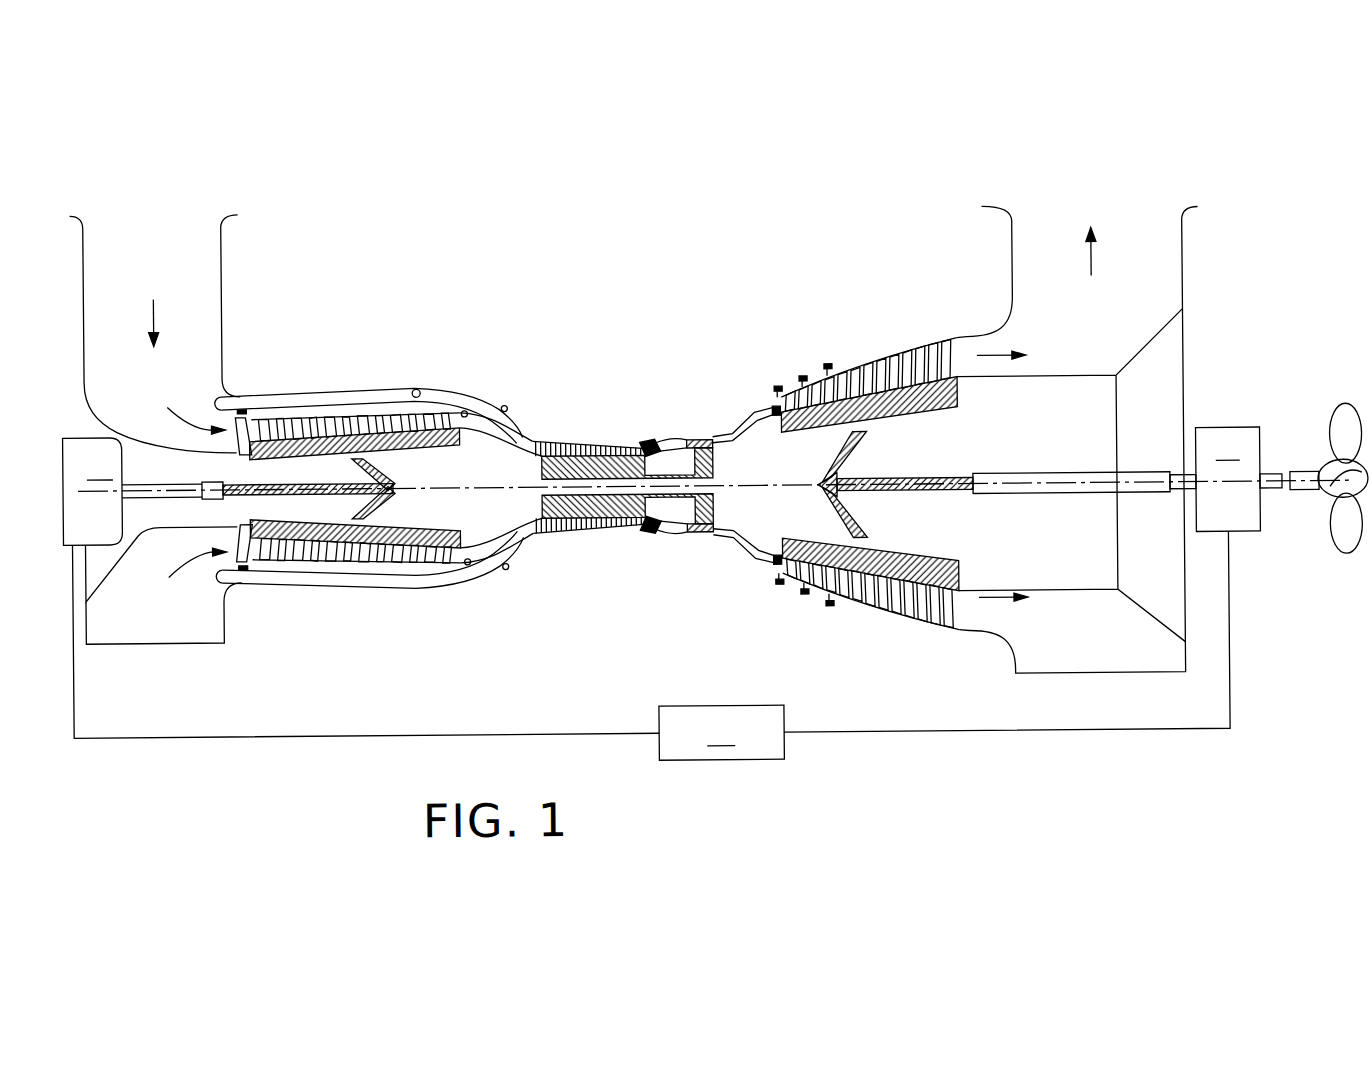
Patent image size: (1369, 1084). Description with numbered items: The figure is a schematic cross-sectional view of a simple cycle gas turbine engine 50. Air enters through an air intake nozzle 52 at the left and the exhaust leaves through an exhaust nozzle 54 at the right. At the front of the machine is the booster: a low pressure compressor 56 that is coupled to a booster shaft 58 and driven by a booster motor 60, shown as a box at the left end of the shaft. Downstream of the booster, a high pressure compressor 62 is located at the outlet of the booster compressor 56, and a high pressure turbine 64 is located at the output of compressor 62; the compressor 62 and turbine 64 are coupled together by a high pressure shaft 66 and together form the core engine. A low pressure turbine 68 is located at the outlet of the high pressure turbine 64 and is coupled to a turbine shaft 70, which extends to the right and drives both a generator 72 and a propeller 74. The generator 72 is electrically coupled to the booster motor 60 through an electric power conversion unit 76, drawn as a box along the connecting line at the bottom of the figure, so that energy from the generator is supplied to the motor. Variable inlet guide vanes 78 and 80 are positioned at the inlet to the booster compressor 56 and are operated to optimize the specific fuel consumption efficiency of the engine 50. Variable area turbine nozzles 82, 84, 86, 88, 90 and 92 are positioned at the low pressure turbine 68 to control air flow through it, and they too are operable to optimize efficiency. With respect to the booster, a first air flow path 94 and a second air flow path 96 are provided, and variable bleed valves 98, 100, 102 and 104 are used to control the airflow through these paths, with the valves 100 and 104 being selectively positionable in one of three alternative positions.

The gas turbine engine 50 is at (648, 328).
The air intake nozzle 52 is at (226, 282).
The exhaust nozzle 54 is at (1013, 276).
The low pressure compressor 56 is at (327, 440).
The booster shaft 58 is at (315, 476).
The booster motor 60 is at (143, 491).
The high pressure compressor 62 is at (572, 524).
The high pressure turbine 64 is at (714, 515).
The high pressure shaft 66 is at (674, 535).
The low pressure turbine 68 is at (898, 557).
The turbine shaft 70 is at (894, 479).
The generator 72 is at (1226, 479).
The propeller 74 is at (1336, 408).
The electric power conversion unit 76 is at (651, 648).
The variable inlet guide vane 78 is at (243, 404).
The variable inlet guide vane 80 is at (243, 567).
The variable area turbine nozzle 82 is at (777, 387).
The variable area turbine nozzle 84 is at (803, 377).
The variable area turbine nozzle 86 is at (829, 365).
The variable area turbine nozzle 88 is at (779, 586).
The variable area turbine nozzle 90 is at (804, 596).
The variable area turbine nozzle 92 is at (829, 606).
The first air flow path 94 is at (418, 388).
The second air flow path 96 is at (212, 419).
The variable bleed valve 98 is at (508, 405).
The variable bleed valve 100 is at (467, 409).
The variable bleed valve 102 is at (518, 567).
The variable bleed valve 104 is at (490, 562).